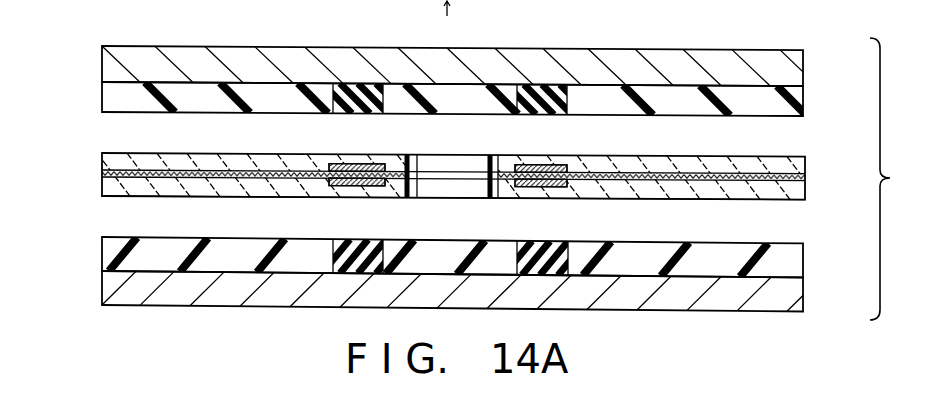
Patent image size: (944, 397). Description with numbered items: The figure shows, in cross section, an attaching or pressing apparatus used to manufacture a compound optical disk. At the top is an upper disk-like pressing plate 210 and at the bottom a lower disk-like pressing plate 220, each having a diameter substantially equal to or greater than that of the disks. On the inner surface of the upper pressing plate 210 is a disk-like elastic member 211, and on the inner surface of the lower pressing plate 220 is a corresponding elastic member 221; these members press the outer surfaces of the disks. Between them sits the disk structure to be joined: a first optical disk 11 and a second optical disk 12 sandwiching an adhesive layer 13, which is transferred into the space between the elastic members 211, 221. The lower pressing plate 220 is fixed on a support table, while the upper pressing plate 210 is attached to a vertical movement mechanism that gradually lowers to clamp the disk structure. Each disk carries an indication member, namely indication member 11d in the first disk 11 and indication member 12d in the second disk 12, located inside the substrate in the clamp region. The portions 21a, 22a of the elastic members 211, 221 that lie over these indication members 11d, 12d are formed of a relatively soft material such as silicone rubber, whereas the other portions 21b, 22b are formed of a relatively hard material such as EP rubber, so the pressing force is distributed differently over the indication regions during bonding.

The upper pressing plate 210 is at (803, 66).
The upper elastic member 211 is at (488, 113).
The soft portion of upper elastic member 21a is at (535, 114).
The hard portion of upper elastic member 21b is at (404, 114).
The first optical disk 11 is at (431, 160).
The indication member 11d is at (343, 154).
The adhesive layer 13 is at (101, 174).
The second optical disk 12 is at (432, 192).
The indication member 12d is at (347, 197).
The lower elastic member 221 is at (483, 244).
The soft portion of lower elastic member 22a is at (538, 241).
The hard portion of lower elastic member 22b is at (413, 240).
The lower pressing plate 220 is at (803, 297).